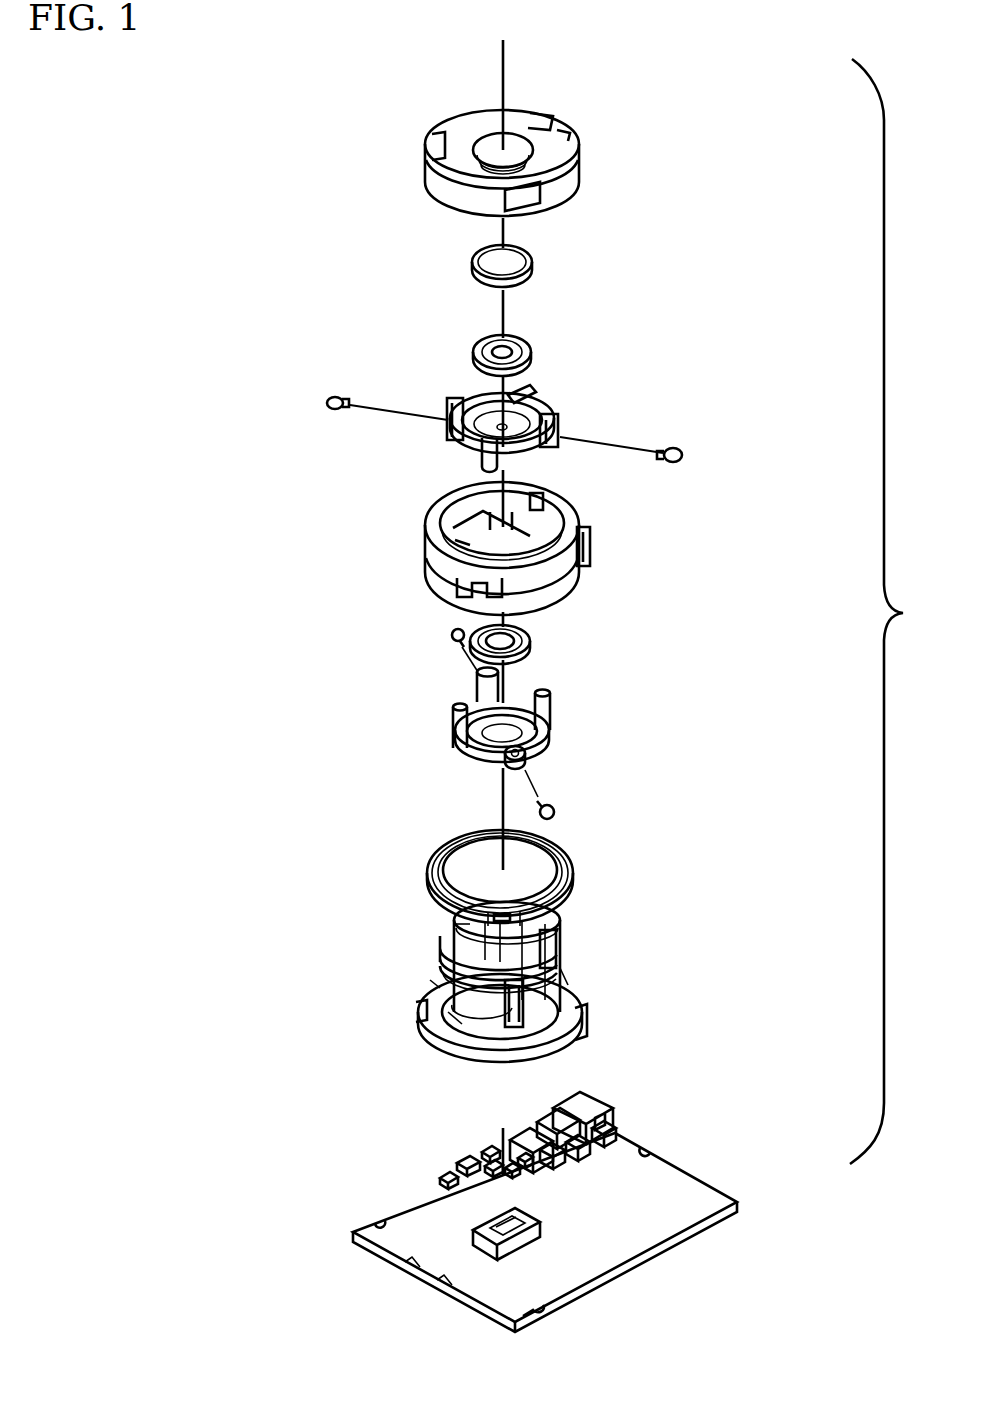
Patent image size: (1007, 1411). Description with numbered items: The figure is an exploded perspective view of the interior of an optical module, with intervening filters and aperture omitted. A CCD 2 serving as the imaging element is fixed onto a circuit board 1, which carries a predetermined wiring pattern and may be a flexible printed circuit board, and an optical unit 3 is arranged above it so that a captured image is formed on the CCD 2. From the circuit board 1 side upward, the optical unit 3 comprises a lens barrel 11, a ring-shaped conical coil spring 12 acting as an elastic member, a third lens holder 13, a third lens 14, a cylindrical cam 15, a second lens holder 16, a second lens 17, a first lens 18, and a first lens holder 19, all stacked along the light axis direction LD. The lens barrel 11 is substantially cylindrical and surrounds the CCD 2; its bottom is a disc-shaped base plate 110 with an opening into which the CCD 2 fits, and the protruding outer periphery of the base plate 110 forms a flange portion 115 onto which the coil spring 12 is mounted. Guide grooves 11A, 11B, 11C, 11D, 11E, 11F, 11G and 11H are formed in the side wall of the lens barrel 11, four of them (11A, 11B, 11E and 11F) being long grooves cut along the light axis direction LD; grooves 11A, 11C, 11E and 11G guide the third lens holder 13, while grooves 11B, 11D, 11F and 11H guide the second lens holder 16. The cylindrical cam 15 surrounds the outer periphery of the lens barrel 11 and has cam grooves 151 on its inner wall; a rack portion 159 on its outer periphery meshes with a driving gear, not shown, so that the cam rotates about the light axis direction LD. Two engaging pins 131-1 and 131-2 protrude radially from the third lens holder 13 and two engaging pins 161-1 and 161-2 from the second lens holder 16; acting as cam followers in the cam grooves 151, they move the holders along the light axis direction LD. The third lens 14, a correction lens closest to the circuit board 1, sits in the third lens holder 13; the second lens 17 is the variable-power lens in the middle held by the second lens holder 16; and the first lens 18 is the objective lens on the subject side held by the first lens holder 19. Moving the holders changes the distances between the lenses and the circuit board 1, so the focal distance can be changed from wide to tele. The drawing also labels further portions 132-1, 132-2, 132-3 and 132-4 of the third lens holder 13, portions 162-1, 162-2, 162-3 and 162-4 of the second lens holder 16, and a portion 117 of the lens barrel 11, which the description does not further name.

The light axis direction LD is at (503, 57).
The first lens holder 19 is at (562, 158).
The first lens 18 is at (518, 262).
The second lens 17 is at (525, 352).
The second lens holder 16 is at (463, 383).
The holder tab 162-1 is at (546, 448).
The holder tab 162-2 is at (507, 385).
The holder tab 162-3 is at (450, 428).
The holder peg 162-4 is at (483, 457).
The engaging pin 161-1 is at (672, 450).
The engaging pin 161-2 is at (327, 400).
The cylindrical cam 15 is at (526, 548).
The cam grooves 151 is at (490, 534).
The rack portion 159 is at (593, 540).
The third lens 14 is at (530, 637).
The third lens holder 13 is at (552, 691).
The engaging pin 131-1 is at (550, 808).
The engaging pin 131-2 is at (452, 632).
The holder boss 132-1 is at (524, 752).
The holder post 132-2 is at (550, 702).
The holder post 132-3 is at (488, 690).
The holder post 132-4 is at (455, 718).
The ring-shaped conical coil spring 12 is at (565, 845).
The lens barrel 11 is at (556, 992).
The guide groove 11A is at (498, 1020).
The guide groove 11B is at (560, 968).
The guide groove 11C is at (563, 923).
The guide groove 11D is at (548, 912).
The guide groove 11E is at (490, 932).
The guide groove 11F is at (452, 923).
The guide groove 11G is at (440, 936).
The guide groove 11H is at (430, 980).
The base plate 110 is at (560, 1065).
The flange portion 115 is at (470, 1012).
The base inner portion 117 is at (440, 995).
The circuit board 1 is at (623, 1240).
The CCD 2 is at (470, 1220).
The optical unit 3 is at (903, 613).